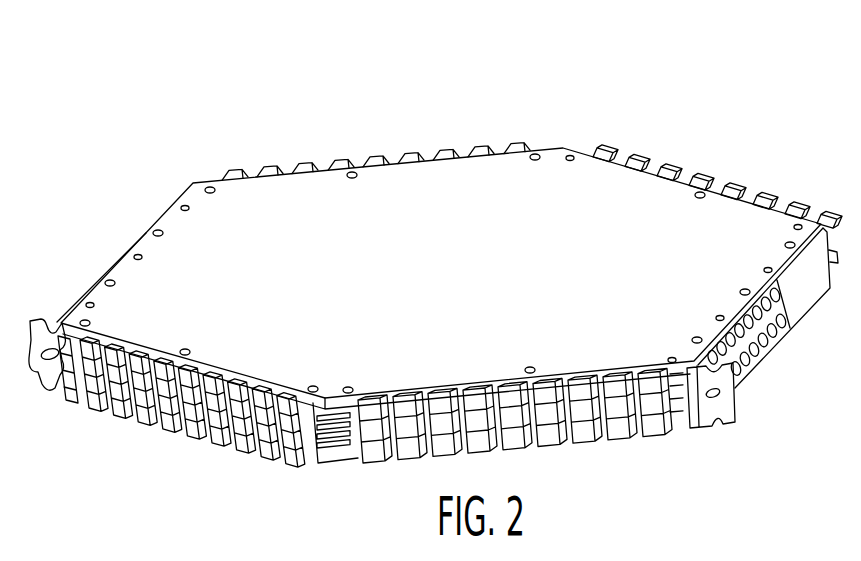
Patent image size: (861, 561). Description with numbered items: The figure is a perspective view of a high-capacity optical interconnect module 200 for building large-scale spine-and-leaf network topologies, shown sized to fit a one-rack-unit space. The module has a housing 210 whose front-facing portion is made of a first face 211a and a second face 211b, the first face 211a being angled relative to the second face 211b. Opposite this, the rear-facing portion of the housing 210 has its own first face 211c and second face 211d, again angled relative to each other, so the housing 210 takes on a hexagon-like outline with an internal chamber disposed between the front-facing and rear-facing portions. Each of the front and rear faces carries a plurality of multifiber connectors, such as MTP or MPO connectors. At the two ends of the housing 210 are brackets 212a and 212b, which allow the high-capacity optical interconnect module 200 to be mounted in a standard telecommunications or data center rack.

The high-capacity optical interconnect module 200 is at (615, 74).
The housing 210 is at (242, 238).
The first face of the front-facing portion 211a is at (302, 382).
The second face of the front-facing portion 211b is at (664, 353).
The first face of the rear-facing portion 211c is at (534, 135).
The second face of the rear-facing portion 211d is at (833, 200).
The bracket 212a is at (45, 318).
The bracket 212b is at (740, 397).